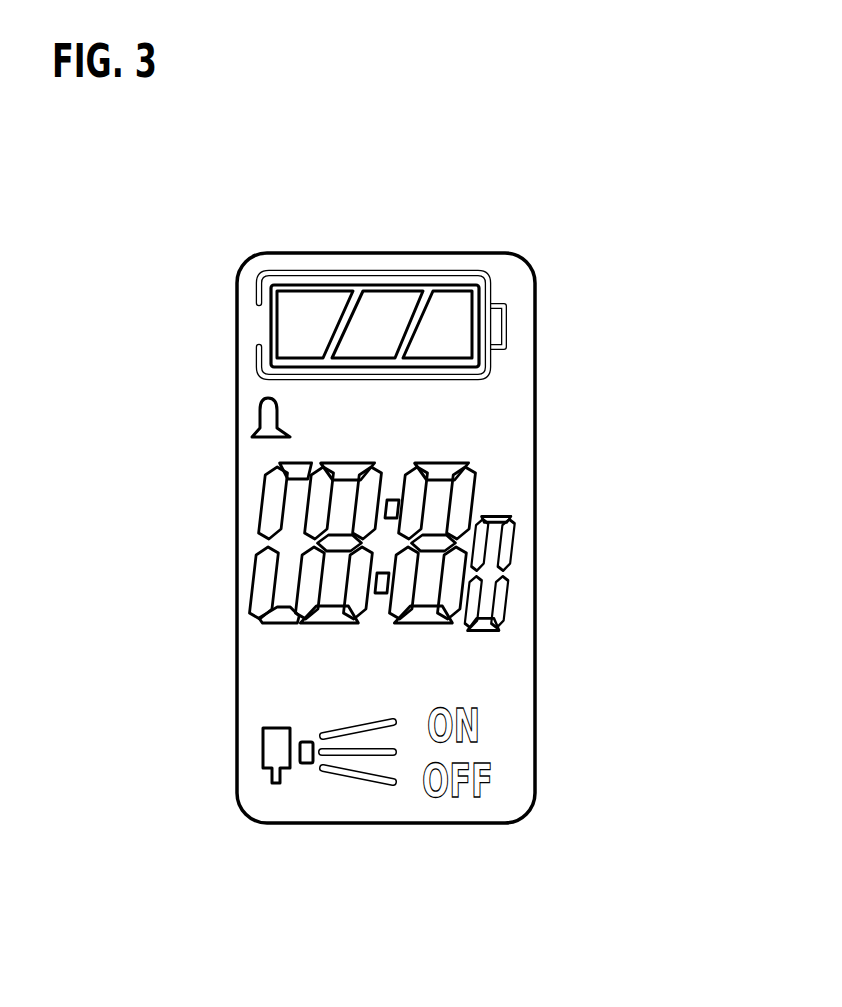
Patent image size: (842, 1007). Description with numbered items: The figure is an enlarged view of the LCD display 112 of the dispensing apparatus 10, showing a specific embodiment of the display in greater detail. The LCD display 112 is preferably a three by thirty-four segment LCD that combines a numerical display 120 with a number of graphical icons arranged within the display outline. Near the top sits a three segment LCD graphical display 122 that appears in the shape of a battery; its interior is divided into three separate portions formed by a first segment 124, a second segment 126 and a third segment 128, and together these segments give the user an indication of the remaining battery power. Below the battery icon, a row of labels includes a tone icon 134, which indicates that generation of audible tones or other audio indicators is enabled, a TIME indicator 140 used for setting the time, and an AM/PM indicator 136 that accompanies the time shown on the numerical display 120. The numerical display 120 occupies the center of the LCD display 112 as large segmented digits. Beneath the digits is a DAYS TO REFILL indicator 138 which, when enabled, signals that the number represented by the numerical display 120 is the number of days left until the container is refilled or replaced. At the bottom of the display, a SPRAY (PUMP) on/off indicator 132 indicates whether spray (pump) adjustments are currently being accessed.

The dispensing apparatus 10 is at (399, 947).
The LCD display 112 is at (253, 913).
The numerical display 120 is at (260, 527).
The three segment LCD graphical display 122 is at (302, 282).
The first segment 124 is at (332, 302).
The second segment 126 is at (400, 302).
The third segment 128 is at (455, 308).
The SPRAY (PUMP) on/off indicator 132 is at (266, 748).
The tone icon 134 is at (255, 418).
The AM/PM indicator 136 is at (525, 423).
The DAYS TO REFILL indicator 138 is at (257, 668).
The TIME indicator 140 is at (293, 395).